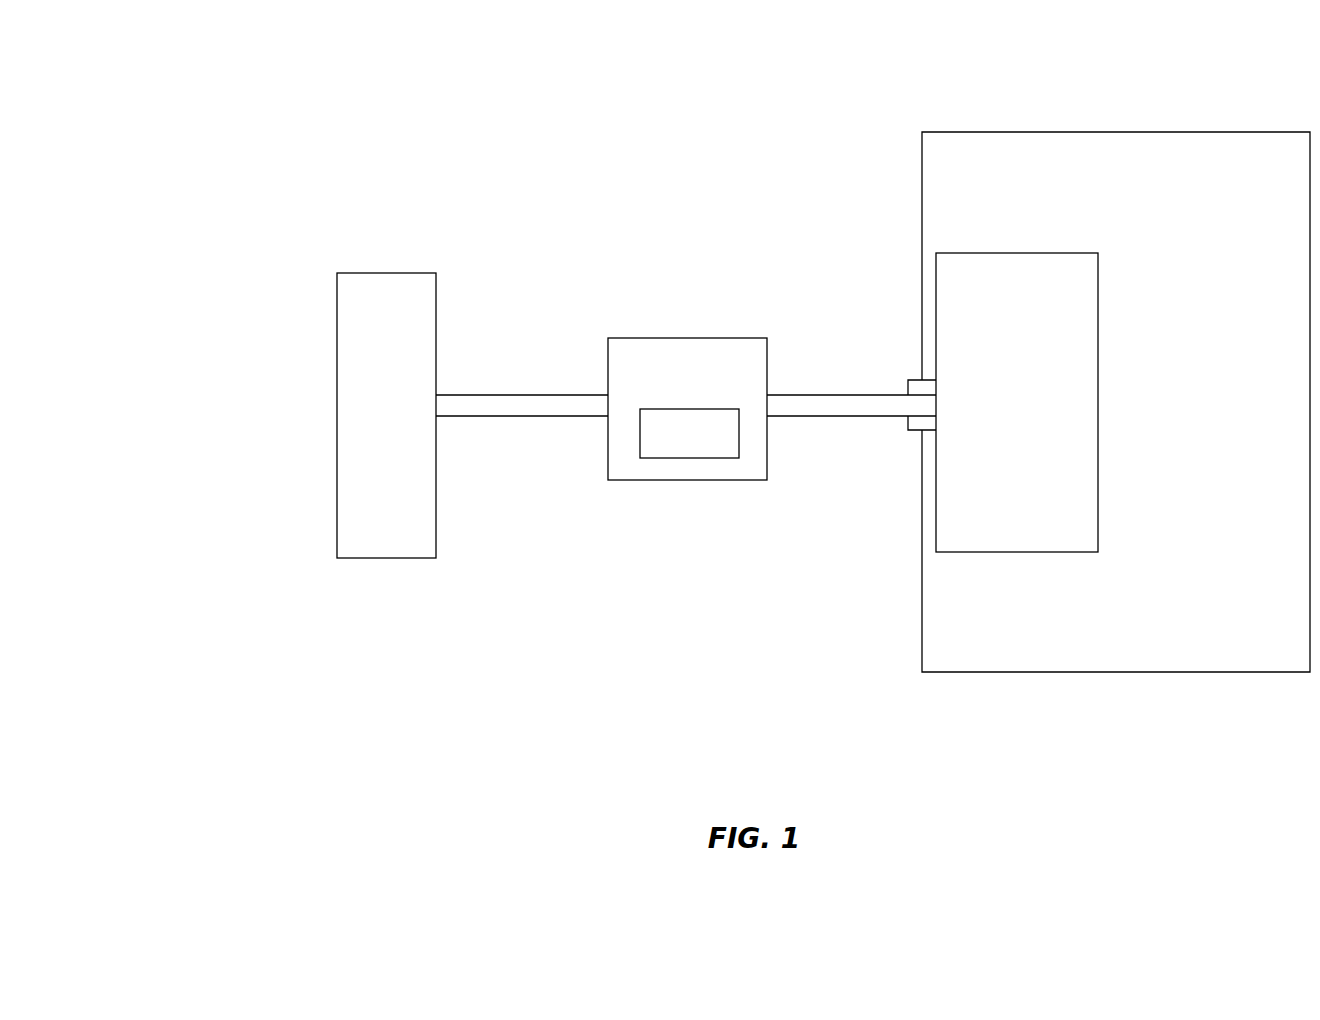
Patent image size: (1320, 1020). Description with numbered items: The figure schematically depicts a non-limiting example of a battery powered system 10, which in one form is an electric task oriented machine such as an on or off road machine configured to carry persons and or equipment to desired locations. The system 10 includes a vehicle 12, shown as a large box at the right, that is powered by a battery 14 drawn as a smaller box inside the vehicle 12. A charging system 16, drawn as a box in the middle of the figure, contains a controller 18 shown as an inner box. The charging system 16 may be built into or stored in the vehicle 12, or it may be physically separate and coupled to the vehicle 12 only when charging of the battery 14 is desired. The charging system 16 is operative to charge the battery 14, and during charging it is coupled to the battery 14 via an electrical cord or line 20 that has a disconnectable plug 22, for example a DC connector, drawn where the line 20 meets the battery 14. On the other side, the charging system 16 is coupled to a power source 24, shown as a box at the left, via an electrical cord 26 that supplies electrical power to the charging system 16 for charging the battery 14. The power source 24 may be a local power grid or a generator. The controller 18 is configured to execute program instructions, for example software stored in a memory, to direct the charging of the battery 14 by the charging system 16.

The battery powered system 10 is at (424, 113).
The vehicle 12 is at (1077, 132).
The battery 14 is at (1000, 413).
The charging system 16 is at (675, 383).
The controller 18 is at (675, 445).
The electrical cord or line 20 is at (847, 395).
The disconnectable plug 22 is at (908, 380).
The power source 24 is at (400, 273).
The electrical cord 26 is at (540, 395).